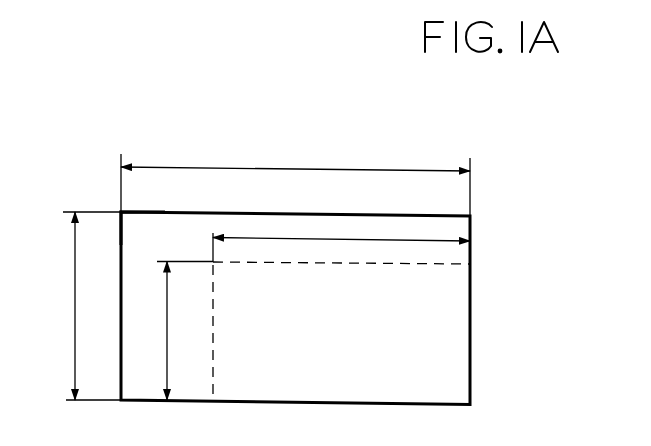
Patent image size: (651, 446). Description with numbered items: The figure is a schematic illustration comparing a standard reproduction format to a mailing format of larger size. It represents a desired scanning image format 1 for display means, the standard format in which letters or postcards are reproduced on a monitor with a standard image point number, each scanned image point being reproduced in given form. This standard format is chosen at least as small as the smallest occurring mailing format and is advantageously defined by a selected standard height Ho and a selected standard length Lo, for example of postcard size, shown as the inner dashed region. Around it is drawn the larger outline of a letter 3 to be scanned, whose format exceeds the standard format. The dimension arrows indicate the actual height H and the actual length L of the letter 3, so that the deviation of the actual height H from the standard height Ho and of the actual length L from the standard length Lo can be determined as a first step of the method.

The scanning image format 1 is at (417, 320).
The letter 3 is at (137, 226).
The actual length L is at (295, 181).
The standard length Lo is at (341, 238).
The actual height H is at (84, 306).
The standard height Ho is at (171, 331).